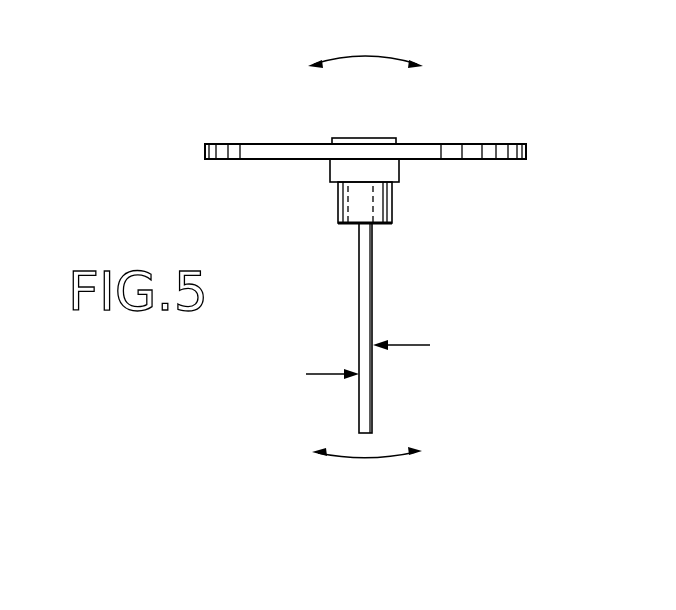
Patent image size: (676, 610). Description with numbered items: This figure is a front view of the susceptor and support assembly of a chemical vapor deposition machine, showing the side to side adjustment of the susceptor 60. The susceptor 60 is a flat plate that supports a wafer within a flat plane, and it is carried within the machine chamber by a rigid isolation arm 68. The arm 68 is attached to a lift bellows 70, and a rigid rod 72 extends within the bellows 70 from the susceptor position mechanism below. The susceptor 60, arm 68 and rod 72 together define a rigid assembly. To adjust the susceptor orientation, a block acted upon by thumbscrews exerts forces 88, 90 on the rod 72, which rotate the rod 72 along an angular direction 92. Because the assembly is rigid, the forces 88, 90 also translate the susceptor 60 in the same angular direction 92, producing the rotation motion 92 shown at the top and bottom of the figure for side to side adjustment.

The susceptor 60 is at (503, 144).
The rigid isolation arm 68 is at (385, 138).
The lift bellows 70 is at (395, 204).
The rigid rod 72 is at (372, 281).
The force 88 is at (325, 374).
The force 90 is at (418, 345).
The angular direction 92 is at (383, 58).